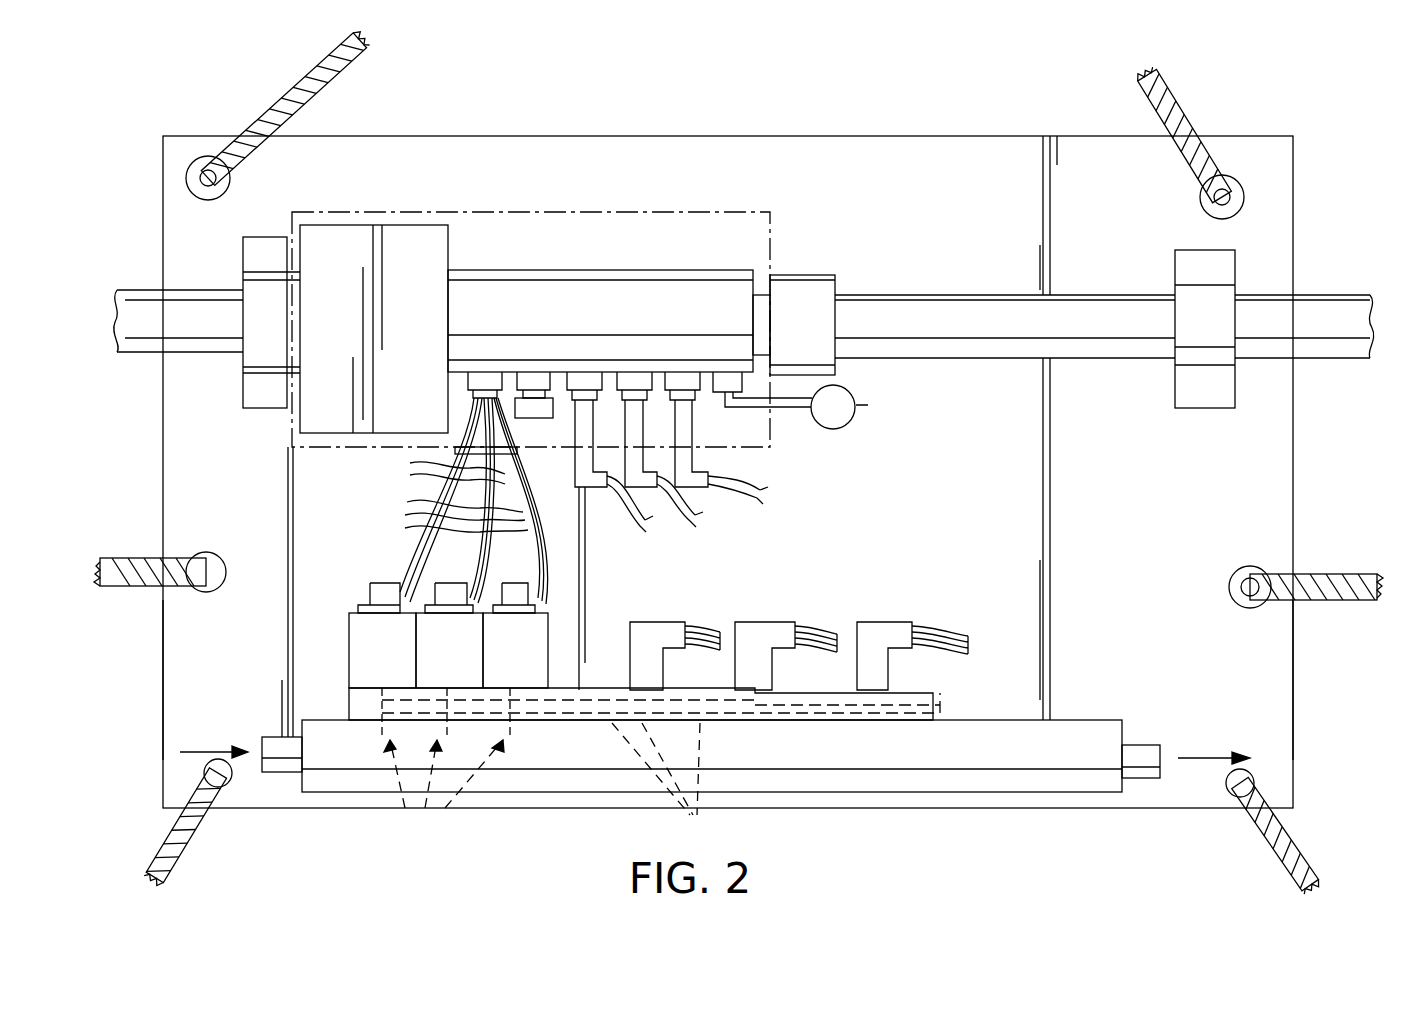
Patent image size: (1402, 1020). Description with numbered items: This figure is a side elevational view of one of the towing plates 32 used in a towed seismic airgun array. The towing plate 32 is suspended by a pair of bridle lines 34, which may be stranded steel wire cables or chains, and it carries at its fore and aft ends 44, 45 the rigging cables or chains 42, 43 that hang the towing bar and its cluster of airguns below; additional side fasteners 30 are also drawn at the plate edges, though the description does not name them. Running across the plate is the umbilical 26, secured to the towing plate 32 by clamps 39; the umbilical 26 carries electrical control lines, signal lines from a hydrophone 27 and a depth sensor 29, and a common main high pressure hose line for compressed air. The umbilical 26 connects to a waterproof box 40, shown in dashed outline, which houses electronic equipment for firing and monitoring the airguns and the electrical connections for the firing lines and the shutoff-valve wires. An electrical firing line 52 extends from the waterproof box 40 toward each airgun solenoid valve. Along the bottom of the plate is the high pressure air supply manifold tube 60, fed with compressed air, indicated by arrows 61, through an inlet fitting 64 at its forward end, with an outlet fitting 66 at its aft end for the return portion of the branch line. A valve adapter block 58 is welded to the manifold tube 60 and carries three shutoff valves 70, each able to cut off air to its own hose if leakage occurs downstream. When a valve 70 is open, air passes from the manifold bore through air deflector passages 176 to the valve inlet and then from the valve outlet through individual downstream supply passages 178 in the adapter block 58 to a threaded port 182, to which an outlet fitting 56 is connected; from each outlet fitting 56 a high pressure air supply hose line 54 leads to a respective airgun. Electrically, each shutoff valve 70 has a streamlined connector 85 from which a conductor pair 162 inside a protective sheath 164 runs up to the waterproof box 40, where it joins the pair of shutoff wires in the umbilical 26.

The umbilical 26 is at (206, 297).
The hydrophone 27 is at (537, 418).
The depth sensor 29 is at (856, 405).
The side mounting screw 30 is at (130, 556).
The towing plate 32 is at (868, 152).
The bridle lines 34 is at (310, 72).
The clamps 39 is at (265, 237).
The waterproof box 40 is at (705, 212).
The rigging cable or chain 42 is at (170, 840).
The rigging cable or chain 43 is at (1290, 840).
The fore end of the towing plate 44 is at (163, 680).
The aft end of the towing plate 45 is at (1293, 688).
The electrical firing line 52 is at (750, 498).
The high pressure air supply hose lines 54 is at (710, 625).
The outlet fittings 56 is at (652, 622).
The valve adapter block 58 is at (935, 697).
The high pressure air supply manifold tube 60 is at (1040, 720).
The high pressure air 61 is at (200, 750).
The inlet fitting 64 is at (270, 737).
The outlet fitting 66 is at (1145, 745).
The shutoff valves 70 is at (529, 662).
The streamlined connectors 85 is at (470, 568).
The conductor pairs 162 is at (439, 516).
The protective sheaths 164 is at (426, 471).
The air deflector passages 176 is at (405, 810).
The downstream supply passages 178 is at (664, 787).
The threaded port 182 is at (665, 697).